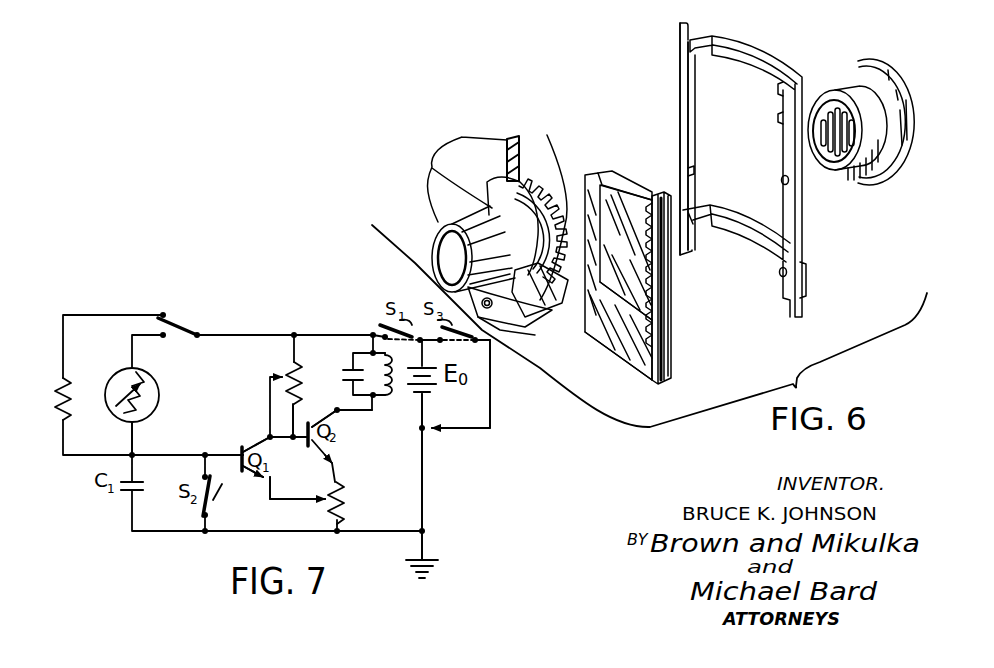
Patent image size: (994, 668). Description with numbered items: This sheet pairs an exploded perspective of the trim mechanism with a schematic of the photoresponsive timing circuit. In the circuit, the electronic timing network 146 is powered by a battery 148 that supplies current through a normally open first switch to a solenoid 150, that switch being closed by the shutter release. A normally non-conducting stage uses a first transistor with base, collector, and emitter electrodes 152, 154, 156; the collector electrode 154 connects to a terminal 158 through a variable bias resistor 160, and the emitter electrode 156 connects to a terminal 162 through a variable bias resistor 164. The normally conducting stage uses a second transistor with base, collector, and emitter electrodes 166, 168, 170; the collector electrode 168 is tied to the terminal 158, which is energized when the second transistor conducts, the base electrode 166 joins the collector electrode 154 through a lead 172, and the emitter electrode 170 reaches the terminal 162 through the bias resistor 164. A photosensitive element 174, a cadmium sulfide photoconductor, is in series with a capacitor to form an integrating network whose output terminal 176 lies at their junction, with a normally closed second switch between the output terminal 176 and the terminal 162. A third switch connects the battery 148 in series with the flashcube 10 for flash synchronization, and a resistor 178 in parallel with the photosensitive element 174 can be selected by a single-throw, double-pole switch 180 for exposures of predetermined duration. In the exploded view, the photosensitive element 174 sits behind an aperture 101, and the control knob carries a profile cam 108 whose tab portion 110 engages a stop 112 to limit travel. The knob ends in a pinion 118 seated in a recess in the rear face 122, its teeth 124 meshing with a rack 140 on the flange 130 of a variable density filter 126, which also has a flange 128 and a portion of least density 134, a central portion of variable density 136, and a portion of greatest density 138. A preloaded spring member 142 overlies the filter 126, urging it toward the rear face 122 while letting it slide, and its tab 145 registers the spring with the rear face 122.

In FIG. 7, the flashcube 10 is at (490, 387).
In FIG. 6, the aperture 101 is at (510, 238).
In FIG. 6, the profile cam 108 is at (440, 172).
In FIG. 6, the tab portion 110 is at (512, 316).
In FIG. 6, the stop 112 is at (502, 324).
In FIG. 6, the pinion 118 is at (540, 293).
In FIG. 6, the rear face 122 is at (468, 150).
In FIG. 6, the teeth 124 is at (556, 185).
In FIG. 6, the variable density filter 126 is at (686, 353).
In FIG. 6, the flange 128 is at (590, 175).
In FIG. 6, the flange 130 is at (672, 260).
In FIG. 6, the portion of least density 134 is at (635, 190).
In FIG. 6, the central portion of variable density 136 is at (635, 259).
In FIG. 6, the portion of greatest density 138 is at (628, 328).
In FIG. 6, the rack 140 is at (627, 307).
In FIG. 6, the spring member 142 is at (782, 205).
In FIG. 6, the tab 145 is at (678, 165).
In FIG. 7, the electronic timing network 146 is at (430, 456).
In FIG. 7, the battery 148 is at (435, 383).
In FIG. 7, the solenoid 150 is at (388, 392).
In FIG. 7, the base electrode 152 is at (220, 454).
In FIG. 7, the collector electrode 154 is at (260, 436).
In FIG. 7, the emitter electrode 156 is at (250, 475).
In FIG. 7, the terminal 158 is at (371, 332).
In FIG. 7, the variable bias resistor 160 is at (318, 372).
In FIG. 7, the terminal 162 is at (427, 531).
In FIG. 7, the variable bias resistor 164 is at (348, 500).
In FIG. 7, the base electrode 166 is at (302, 440).
In FIG. 7, the collector electrode 168 is at (340, 413).
In FIG. 7, the emitter electrode 170 is at (320, 460).
In FIG. 7, the lead 172 is at (290, 428).
In FIG. 7, the photosensitive element 174 is at (113, 375).
In FIG. 6, the photosensitive element 174 is at (840, 100).
In FIG. 7, the output terminal 176 is at (130, 453).
In FIG. 7, the resistor 178 is at (63, 405).
In FIG. 7, the single-throw, double-pole switch 180 is at (185, 328).